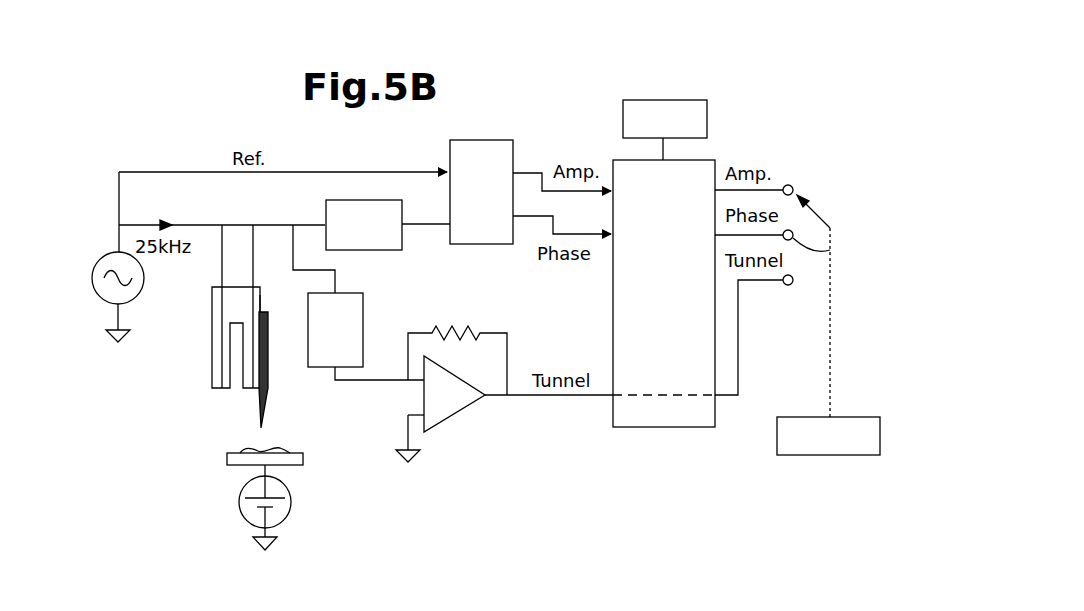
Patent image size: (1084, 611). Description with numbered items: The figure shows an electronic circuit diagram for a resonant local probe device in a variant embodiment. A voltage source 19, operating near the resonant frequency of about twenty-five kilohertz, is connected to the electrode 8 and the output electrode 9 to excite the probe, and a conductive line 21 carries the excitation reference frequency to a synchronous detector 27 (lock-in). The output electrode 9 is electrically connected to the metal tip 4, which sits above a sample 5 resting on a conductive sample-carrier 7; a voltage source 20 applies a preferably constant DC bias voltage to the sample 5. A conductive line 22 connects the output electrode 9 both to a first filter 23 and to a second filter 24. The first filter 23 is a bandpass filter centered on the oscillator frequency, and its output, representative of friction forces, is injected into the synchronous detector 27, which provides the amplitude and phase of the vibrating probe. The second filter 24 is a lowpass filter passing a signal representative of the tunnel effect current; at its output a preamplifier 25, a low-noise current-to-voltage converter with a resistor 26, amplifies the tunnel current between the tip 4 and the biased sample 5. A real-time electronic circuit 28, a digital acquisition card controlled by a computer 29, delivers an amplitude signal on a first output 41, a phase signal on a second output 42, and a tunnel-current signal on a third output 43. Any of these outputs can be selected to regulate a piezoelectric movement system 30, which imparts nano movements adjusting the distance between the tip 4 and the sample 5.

The metal tip 4 is at (262, 402).
The sample 5 is at (250, 451).
The conductive sample-carrier 7 is at (303, 460).
The electrode 8 is at (212, 350).
The output electrode 9 is at (262, 297).
The voltage source 19 is at (110, 255).
The voltage source 20 is at (240, 489).
The conductive line 21 is at (195, 172).
The conductive line 22 is at (279, 224).
The first filter 23 is at (388, 225).
The second filter 24 is at (366, 336).
The preamplifier 25 is at (455, 405).
The resistor 26 is at (462, 326).
The synchronous detector 27 is at (530, 192).
The real-time electronic circuit 28 is at (698, 293).
The computer 29 is at (665, 130).
The piezoelectric movement system 30 is at (777, 448).
The first output 41 is at (790, 184).
The second output 42 is at (832, 252).
The third output 43 is at (790, 286).